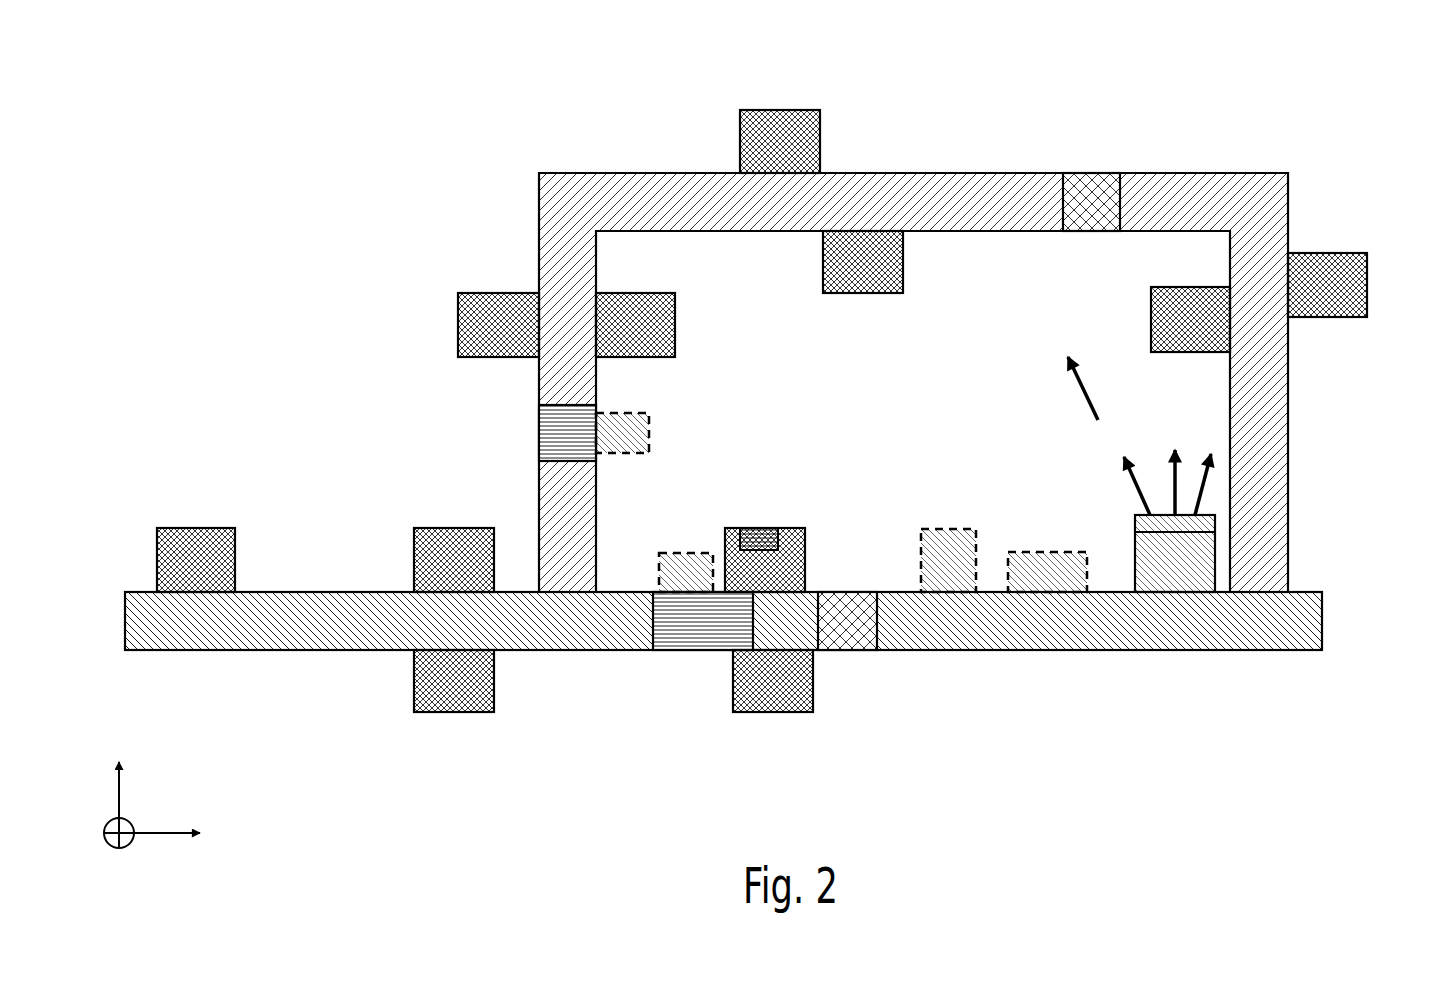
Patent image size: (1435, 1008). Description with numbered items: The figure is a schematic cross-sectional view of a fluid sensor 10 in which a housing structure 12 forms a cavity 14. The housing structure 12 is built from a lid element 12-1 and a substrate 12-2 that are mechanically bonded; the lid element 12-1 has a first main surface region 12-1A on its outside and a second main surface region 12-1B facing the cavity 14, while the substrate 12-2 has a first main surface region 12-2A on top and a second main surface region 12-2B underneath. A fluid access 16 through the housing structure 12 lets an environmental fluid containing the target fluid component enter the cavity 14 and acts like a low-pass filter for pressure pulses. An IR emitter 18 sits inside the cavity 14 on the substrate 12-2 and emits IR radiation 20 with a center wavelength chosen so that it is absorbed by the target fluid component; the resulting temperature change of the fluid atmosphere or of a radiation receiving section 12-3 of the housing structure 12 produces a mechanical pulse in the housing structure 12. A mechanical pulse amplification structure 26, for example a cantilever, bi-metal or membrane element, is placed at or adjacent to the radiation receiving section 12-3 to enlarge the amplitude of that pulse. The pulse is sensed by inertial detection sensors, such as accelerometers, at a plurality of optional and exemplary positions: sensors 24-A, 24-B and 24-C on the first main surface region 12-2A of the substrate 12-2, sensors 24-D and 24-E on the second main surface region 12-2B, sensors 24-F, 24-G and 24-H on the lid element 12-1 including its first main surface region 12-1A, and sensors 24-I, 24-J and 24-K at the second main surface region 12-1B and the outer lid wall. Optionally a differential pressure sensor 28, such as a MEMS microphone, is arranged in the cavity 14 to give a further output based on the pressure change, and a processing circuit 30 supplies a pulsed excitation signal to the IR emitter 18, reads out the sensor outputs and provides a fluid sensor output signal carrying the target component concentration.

The fluid sensor 10 is at (1284, 57).
The housing structure 12 is at (1397, 545).
The lid element 12-1 is at (1262, 572).
The first main surface region of the lid 12-1A is at (922, 171).
The second main surface region of the lid 12-1B is at (935, 233).
The substrate 12-2 is at (1297, 625).
The first main surface region of the substrate 12-2A is at (991, 589).
The second main surface region of the substrate 12-2B is at (1064, 652).
The radiation receiving section 12-3 is at (537, 436).
The cavity 14 is at (809, 402).
The fluid access 16 is at (1091, 171).
The IR emitter 18 is at (1202, 562).
The IR radiation 20 is at (1130, 415).
The inertial detection sensor at position A 24-A is at (807, 570).
The inertial detection sensor at position B 24-B is at (444, 527).
The inertial detection sensor at position C 24-C is at (224, 574).
The inertial detection sensor at position D 24-D is at (452, 713).
The inertial detection sensor at position E 24-E is at (770, 713).
The inertial detection sensor at position F 24-F is at (677, 327).
The inertial detection sensor at position G 24-G is at (456, 325).
The inertial detection sensor at position H 24-H is at (812, 76).
The inertial detection sensor at position I 24-I is at (861, 295).
The inertial detection sensor at position J 24-J is at (1149, 302).
The inertial detection sensor at position K 24-K is at (1327, 254).
The mechanical pulse amplification structure 26 is at (633, 428).
The differential pressure sensor 28 is at (936, 527).
The processing circuit 30 is at (1059, 569).